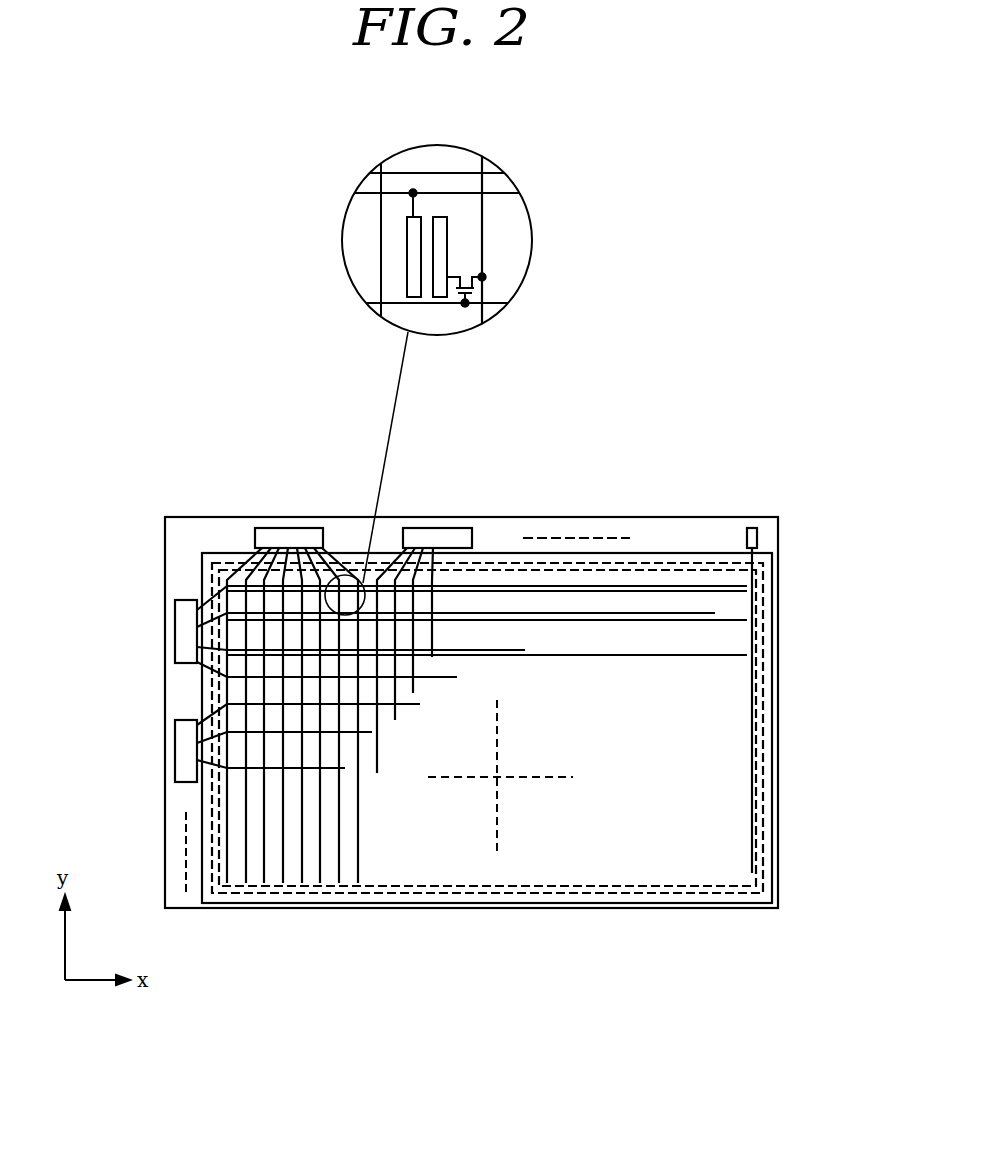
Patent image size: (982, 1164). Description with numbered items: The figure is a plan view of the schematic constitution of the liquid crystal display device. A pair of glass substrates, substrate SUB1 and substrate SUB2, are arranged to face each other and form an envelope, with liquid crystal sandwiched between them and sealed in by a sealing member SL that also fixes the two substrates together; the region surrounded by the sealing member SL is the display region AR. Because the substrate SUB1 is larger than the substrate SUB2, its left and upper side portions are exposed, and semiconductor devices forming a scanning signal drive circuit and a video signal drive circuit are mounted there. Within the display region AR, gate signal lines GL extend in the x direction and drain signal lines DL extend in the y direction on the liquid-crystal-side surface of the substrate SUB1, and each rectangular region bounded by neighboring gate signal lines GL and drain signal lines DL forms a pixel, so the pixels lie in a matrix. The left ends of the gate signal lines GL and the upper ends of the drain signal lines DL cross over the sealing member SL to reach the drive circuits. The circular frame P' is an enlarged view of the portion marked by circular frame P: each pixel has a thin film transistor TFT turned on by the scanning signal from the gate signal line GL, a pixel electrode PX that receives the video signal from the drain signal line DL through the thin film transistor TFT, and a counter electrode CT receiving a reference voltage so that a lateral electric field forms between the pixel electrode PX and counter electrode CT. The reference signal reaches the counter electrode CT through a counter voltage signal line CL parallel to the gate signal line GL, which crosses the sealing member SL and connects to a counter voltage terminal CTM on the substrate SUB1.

The counter voltage signal line CL is at (440, 192).
The circular frame P' is at (454, 129).
The drain signal line DL is at (483, 212).
The counter electrode CT is at (407, 240).
The pixel electrode PX is at (450, 252).
The thin film transistor TFT is at (483, 290).
The gate signal line GL is at (404, 304).
The substrate SUB1 is at (218, 516).
The substrate SUB2 is at (202, 842).
The counter voltage terminal CTM is at (758, 537).
The sealing member SL is at (470, 894).
The circular frame P is at (357, 595).
The display region AR is at (559, 786).